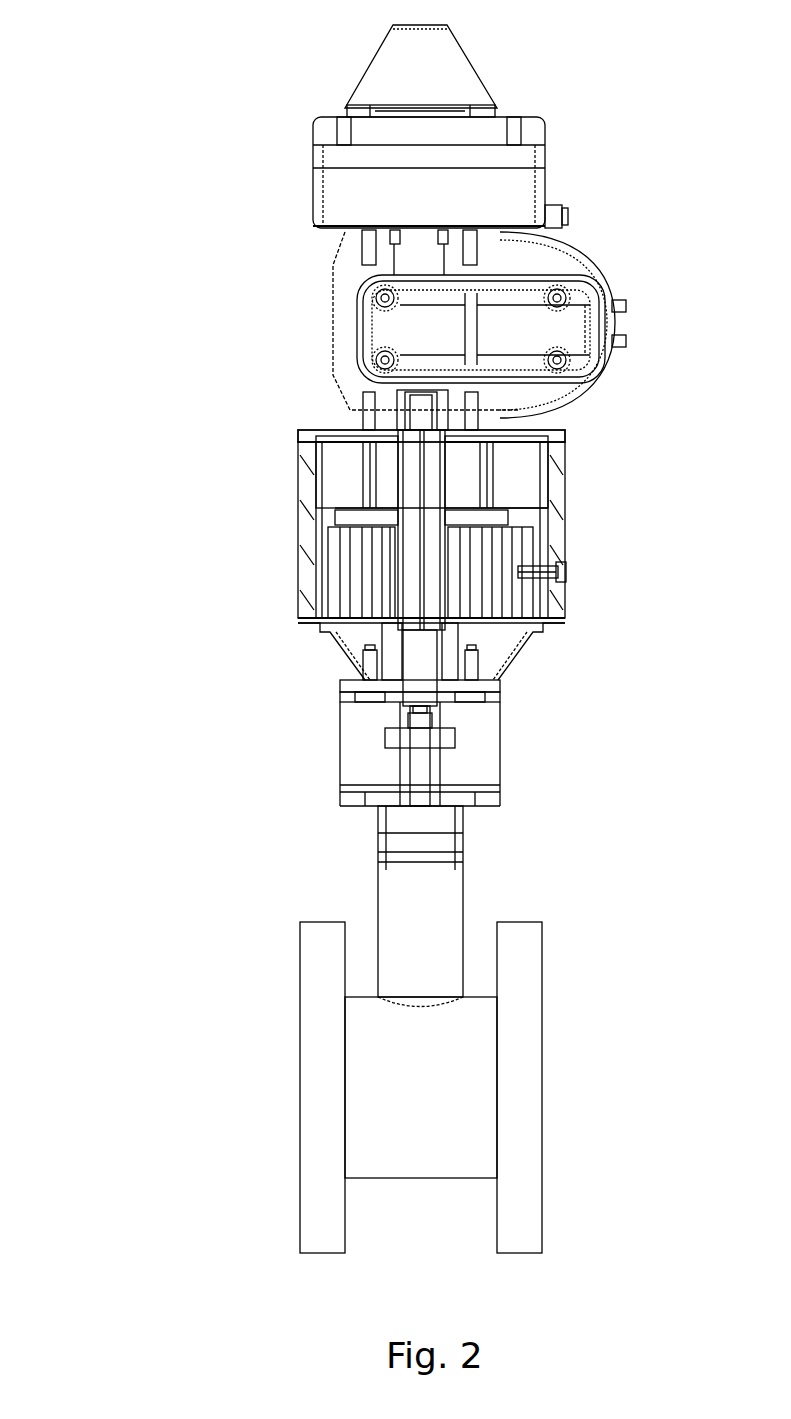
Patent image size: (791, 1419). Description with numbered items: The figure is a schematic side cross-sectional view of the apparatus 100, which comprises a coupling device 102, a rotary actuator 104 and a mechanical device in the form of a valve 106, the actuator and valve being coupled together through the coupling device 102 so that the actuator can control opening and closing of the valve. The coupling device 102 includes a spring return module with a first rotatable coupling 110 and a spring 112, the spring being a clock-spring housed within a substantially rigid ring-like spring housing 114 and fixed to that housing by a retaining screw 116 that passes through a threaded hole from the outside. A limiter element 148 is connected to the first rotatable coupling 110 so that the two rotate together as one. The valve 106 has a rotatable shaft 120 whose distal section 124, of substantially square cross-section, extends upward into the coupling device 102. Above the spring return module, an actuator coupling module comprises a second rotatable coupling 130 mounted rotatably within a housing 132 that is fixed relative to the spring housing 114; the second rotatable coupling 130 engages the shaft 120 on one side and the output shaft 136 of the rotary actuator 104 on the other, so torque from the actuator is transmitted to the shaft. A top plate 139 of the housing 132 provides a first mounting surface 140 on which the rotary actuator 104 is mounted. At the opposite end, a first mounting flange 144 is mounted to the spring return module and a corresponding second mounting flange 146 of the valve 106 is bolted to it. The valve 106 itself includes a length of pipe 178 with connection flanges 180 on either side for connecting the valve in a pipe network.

The apparatus 100 is at (120, 148).
The coupling device 102 is at (690, 514).
The rotary actuator 104 is at (609, 278).
The valve 106 is at (282, 916).
The first rotatable coupling 110 is at (395, 590).
The spring 112 is at (330, 560).
The spring housing 114 is at (565, 598).
The retaining screw 116 is at (565, 573).
The rotatable shaft 120 is at (430, 660).
The distal section 124 is at (432, 542).
The second rotatable coupling 130 is at (405, 455).
The housing 132 is at (565, 466).
The output shaft 136 is at (418, 422).
The top plate 139 is at (565, 437).
The first mounting surface 140 is at (545, 430).
The first mounting flange 144 is at (335, 655).
The second mounting flange 146 is at (340, 698).
The limiter element 148 is at (340, 522).
The pipe 178 is at (421, 1178).
The connection flanges 180 is at (540, 1018).